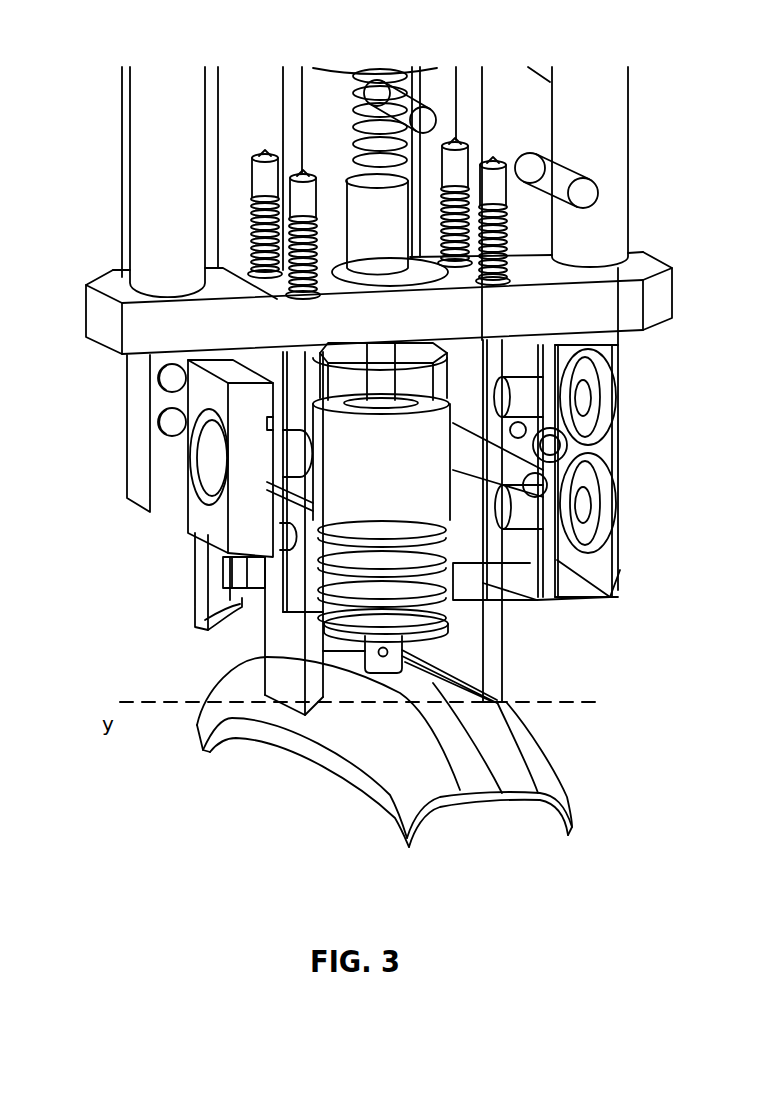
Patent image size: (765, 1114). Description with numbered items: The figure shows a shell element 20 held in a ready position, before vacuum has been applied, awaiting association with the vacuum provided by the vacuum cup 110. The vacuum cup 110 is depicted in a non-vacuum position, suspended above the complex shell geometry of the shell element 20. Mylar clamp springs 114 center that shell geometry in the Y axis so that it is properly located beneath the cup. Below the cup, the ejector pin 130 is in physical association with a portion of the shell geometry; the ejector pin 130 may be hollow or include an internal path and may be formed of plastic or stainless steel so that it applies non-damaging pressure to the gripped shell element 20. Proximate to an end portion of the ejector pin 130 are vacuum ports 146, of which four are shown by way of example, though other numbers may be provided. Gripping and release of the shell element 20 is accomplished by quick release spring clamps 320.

The shell element 20 is at (546, 757).
The vacuum cup 110 is at (400, 603).
The Mylar clamp springs 114 is at (505, 666).
The ejector pin 130 is at (387, 670).
The vacuum ports 146 is at (379, 653).
The quick release spring clamps 320 is at (188, 535).